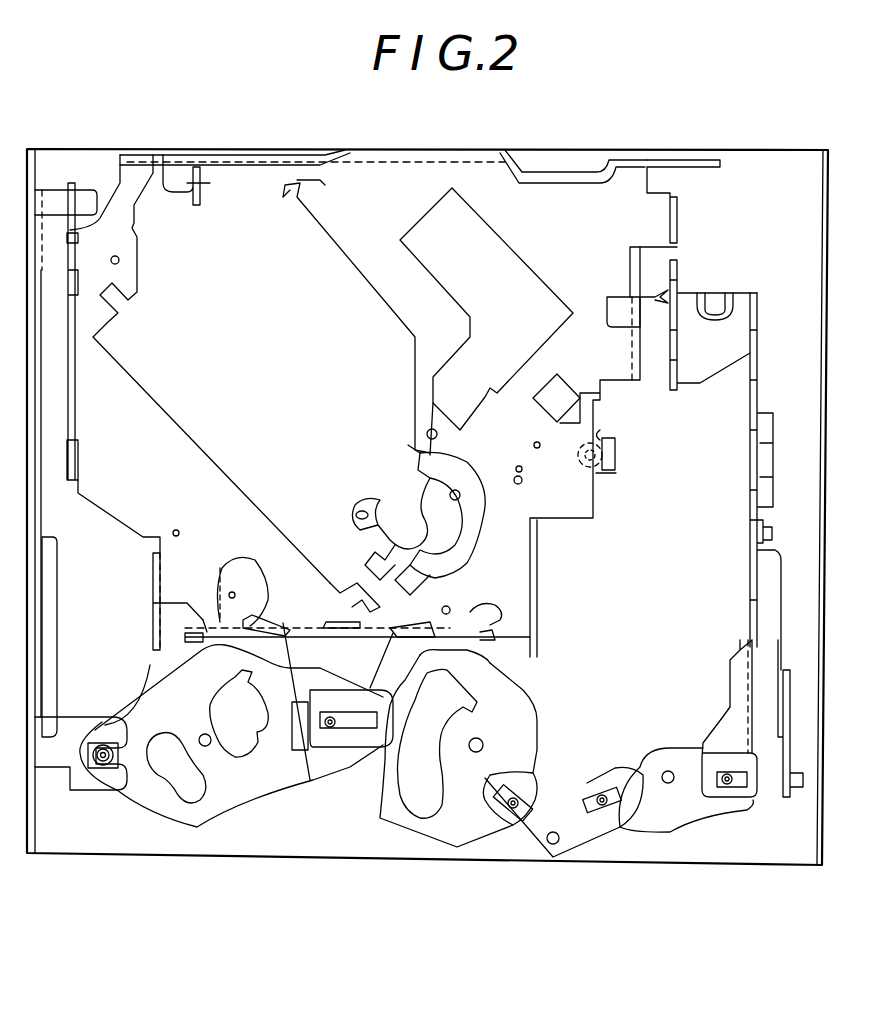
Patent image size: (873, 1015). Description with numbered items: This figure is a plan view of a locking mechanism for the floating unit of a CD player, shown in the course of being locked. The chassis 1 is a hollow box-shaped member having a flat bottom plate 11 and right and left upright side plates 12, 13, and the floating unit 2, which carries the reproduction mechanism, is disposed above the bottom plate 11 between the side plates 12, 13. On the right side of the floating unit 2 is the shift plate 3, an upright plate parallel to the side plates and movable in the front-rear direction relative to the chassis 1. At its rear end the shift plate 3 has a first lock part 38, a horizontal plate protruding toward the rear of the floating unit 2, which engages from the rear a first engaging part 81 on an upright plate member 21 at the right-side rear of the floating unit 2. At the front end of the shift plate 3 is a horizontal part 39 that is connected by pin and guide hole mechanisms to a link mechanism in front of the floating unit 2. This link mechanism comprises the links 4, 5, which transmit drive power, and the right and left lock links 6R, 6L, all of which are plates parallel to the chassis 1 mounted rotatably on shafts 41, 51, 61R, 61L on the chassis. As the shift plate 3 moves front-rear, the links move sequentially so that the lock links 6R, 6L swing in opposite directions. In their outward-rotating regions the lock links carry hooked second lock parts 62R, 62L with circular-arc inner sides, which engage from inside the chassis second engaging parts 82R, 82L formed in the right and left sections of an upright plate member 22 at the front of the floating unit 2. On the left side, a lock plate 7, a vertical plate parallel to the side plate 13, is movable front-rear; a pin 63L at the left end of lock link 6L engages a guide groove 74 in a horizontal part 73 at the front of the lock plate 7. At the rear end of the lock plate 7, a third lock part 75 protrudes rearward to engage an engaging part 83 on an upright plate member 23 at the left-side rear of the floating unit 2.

The chassis 1 is at (758, 935).
The floating unit 2 is at (657, 217).
The shift plate 3 is at (760, 348).
The link 4 is at (670, 820).
The link 5 is at (578, 840).
The left lock link 6L is at (233, 793).
The right lock link 6R is at (453, 820).
The lock plate 7 is at (40, 398).
The bottom plate 11 is at (70, 840).
The right side plate 12 is at (815, 860).
The left side plate 13 is at (27, 800).
The upright plate member 21 is at (632, 400).
The upright plate member 22 is at (455, 640).
The upright plate member 23 is at (84, 330).
The first lock part 38 is at (647, 297).
The horizontal part 39 is at (723, 717).
The shaft 41 is at (668, 768).
The shaft 51 is at (553, 845).
The shaft 61L is at (200, 734).
The shaft 61R is at (483, 743).
The second lock part 62L is at (290, 530).
The second lock part 62R is at (490, 663).
The pin 63L is at (117, 772).
The horizontal part 73 is at (65, 740).
The guide groove 74 is at (93, 735).
The third lock part 75 is at (88, 197).
The first engaging part 81 is at (638, 357).
The second engaging part 82L is at (220, 620).
The second engaging part 82R is at (500, 608).
The engaging part 83 is at (70, 230).